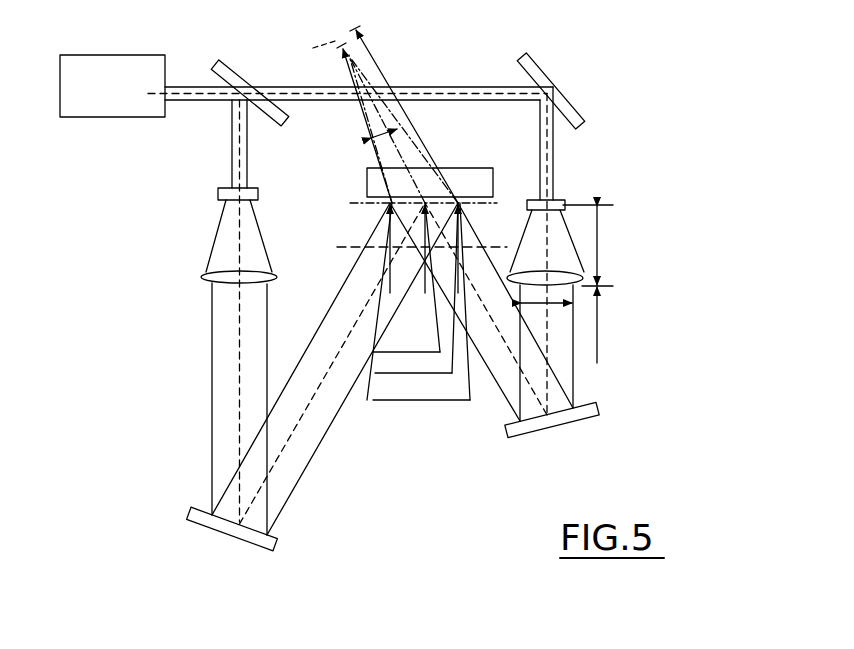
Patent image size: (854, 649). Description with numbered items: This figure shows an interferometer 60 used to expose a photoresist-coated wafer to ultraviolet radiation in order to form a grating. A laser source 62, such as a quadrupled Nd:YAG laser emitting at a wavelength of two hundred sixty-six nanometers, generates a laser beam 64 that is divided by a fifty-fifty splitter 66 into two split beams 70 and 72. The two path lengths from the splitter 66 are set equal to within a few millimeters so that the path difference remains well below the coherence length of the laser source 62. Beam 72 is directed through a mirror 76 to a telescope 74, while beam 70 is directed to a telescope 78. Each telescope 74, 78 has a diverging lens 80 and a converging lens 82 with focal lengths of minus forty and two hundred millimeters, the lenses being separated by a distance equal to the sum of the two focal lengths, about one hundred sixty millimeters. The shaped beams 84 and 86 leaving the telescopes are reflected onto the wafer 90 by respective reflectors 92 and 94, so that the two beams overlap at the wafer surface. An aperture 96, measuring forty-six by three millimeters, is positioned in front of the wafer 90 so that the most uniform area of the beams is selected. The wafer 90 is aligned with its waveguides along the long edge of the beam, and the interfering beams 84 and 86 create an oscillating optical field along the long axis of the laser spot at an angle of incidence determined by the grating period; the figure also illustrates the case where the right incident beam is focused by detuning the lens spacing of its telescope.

The interferometer 60 is at (686, 181).
The laser source 62 is at (118, 55).
The laser beam 64 is at (183, 85).
The splitter 66 is at (241, 73).
The split beam 70 is at (232, 145).
The split beam 72 is at (398, 86).
The telescope 74 is at (646, 168).
The mirror 76 is at (560, 86).
The telescope 78 is at (201, 222).
The diverging lens 80 is at (218, 193).
The converging lens 82 is at (205, 275).
The shaped beam 84 is at (212, 336).
The shaped beam 86 is at (498, 393).
The wafer 90 is at (366, 202).
The reflector 92 is at (196, 520).
The reflector 94 is at (584, 421).
The aperture 96 is at (348, 245).